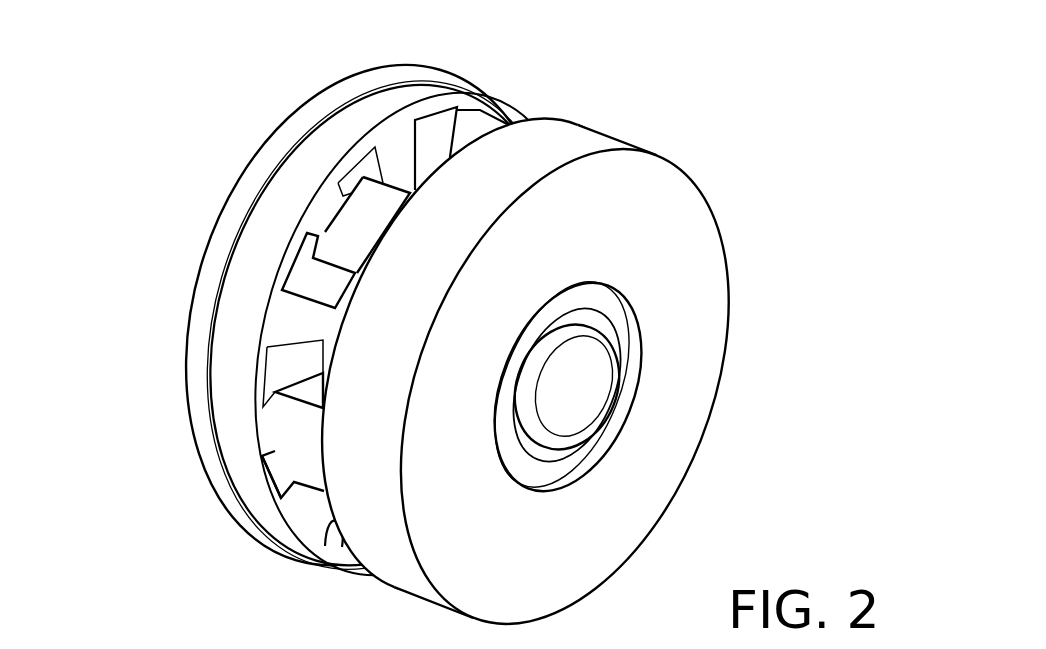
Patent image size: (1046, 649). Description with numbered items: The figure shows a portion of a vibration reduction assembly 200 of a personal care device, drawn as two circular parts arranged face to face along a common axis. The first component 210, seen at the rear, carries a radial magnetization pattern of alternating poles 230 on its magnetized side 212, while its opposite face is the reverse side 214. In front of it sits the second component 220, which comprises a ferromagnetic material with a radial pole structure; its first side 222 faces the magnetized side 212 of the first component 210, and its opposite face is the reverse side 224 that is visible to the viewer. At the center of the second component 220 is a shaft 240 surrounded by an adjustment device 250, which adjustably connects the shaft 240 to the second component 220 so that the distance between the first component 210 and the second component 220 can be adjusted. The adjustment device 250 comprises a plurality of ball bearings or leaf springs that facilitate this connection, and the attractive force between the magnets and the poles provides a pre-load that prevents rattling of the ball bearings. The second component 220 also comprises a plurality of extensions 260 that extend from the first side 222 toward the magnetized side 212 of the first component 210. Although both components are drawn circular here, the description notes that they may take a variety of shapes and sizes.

The vibration reduction assembly 200 is at (128, 78).
The first component 210 is at (444, 92).
The magnetized side 212 is at (390, 145).
The reverse side 214 is at (374, 317).
The second component 220 is at (579, 144).
The first side 222 is at (333, 526).
The reverse side 224 is at (717, 314).
The alternating poles 230 is at (298, 357).
The shaft 240 is at (595, 396).
The adjustment device 250 is at (610, 321).
The extensions 260 is at (290, 455).